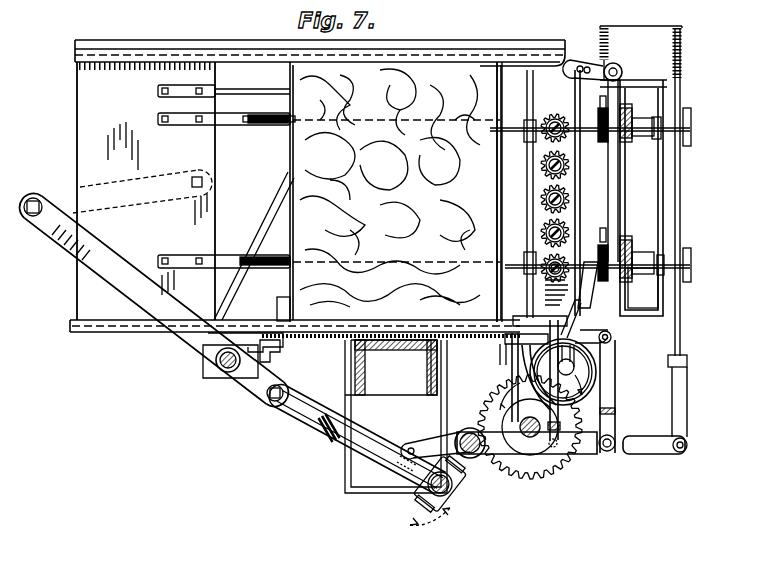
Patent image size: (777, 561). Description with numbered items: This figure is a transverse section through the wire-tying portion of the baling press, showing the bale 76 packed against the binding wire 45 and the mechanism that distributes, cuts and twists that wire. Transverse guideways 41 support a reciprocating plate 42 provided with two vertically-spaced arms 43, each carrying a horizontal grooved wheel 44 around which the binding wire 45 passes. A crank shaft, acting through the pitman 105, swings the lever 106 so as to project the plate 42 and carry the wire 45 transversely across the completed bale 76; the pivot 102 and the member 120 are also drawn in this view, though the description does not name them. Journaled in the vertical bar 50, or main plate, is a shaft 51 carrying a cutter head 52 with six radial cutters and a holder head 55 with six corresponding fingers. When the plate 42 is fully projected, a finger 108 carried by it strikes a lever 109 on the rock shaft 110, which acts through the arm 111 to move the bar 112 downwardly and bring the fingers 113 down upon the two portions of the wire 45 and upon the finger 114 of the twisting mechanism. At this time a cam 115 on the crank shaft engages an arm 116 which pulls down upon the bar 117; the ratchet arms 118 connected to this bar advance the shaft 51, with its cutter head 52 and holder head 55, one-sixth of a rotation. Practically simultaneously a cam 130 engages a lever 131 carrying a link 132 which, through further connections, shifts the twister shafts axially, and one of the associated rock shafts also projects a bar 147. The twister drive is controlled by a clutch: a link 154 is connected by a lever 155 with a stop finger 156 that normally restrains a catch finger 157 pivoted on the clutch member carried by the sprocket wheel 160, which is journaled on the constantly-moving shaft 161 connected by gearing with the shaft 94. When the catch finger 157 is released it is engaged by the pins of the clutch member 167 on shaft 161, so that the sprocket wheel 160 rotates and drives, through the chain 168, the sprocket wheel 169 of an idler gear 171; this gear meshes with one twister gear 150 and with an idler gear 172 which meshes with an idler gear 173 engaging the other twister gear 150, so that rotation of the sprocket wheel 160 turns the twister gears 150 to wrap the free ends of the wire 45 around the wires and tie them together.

The transverse guideways 41 is at (133, 41).
The reciprocating plate 42 is at (144, 191).
The vertically-spaced arms 43 is at (246, 126).
The grooved wheel 44 is at (261, 127).
The binding wire 45 is at (508, 125).
The vertical bar 50 is at (624, 188).
The shaft 51 is at (691, 128).
The cutter head 52 is at (600, 112).
The holder head 55 is at (625, 142).
The bale 76 is at (440, 80).
The shaft 94 is at (532, 440).
The pivot pin 102 is at (469, 428).
The pitman 105 is at (372, 444).
The lever 106 is at (193, 338).
The finger 108 is at (263, 84).
The lever 109 is at (612, 98).
The rock shaft 110 is at (614, 64).
The arm 111 is at (587, 60).
The bar 112 is at (579, 170).
The fingers 113 is at (630, 128).
The finger 114 is at (554, 122).
The cam 115 is at (418, 468).
The arm 116 is at (452, 452).
The bar 117 is at (683, 337).
The ratchet arms 118 is at (692, 113).
The spring 120 is at (685, 138).
The cam 130 is at (378, 483).
The lever 131 is at (420, 441).
The link 132 is at (600, 384).
The bar 147 is at (530, 210).
The twister gears 150 is at (532, 146).
The link 154 is at (525, 396).
The lever 155 is at (610, 352).
The stop finger 156 is at (612, 338).
The catch finger 157 is at (504, 337).
The sprocket wheel 160 is at (598, 407).
The constantly-moving shaft 161 is at (596, 392).
The clutch member 167 is at (612, 377).
The chain 168 is at (593, 300).
The sprocket wheel 169 is at (568, 217).
The idler gear 171 is at (576, 233).
The idler gear 172 is at (541, 197).
The idler gear 173 is at (541, 168).